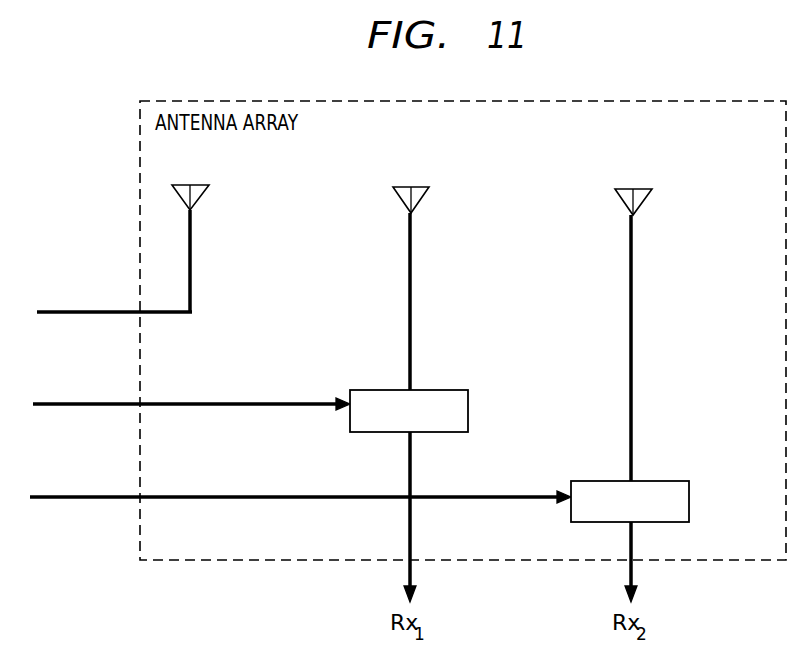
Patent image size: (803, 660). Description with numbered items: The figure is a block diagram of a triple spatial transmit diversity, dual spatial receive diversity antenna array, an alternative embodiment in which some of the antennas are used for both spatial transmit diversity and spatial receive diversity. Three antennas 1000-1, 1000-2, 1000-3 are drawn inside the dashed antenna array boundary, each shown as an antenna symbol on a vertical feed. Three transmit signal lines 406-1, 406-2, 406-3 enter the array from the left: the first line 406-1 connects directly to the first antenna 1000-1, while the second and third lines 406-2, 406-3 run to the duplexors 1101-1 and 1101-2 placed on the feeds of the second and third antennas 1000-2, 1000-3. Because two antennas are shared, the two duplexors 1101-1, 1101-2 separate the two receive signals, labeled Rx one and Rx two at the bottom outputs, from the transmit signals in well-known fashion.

The antenna element 1000-1 is at (192, 223).
The antenna element 1000-2 is at (412, 225).
The antenna element 1000-3 is at (634, 227).
The transmit signal line 406-1 is at (56, 310).
The transmit signal line 406-2 is at (56, 402).
The transmit signal line 406-3 is at (55, 495).
The duplexor 1101-1 is at (441, 390).
The duplexor 1101-2 is at (660, 481).